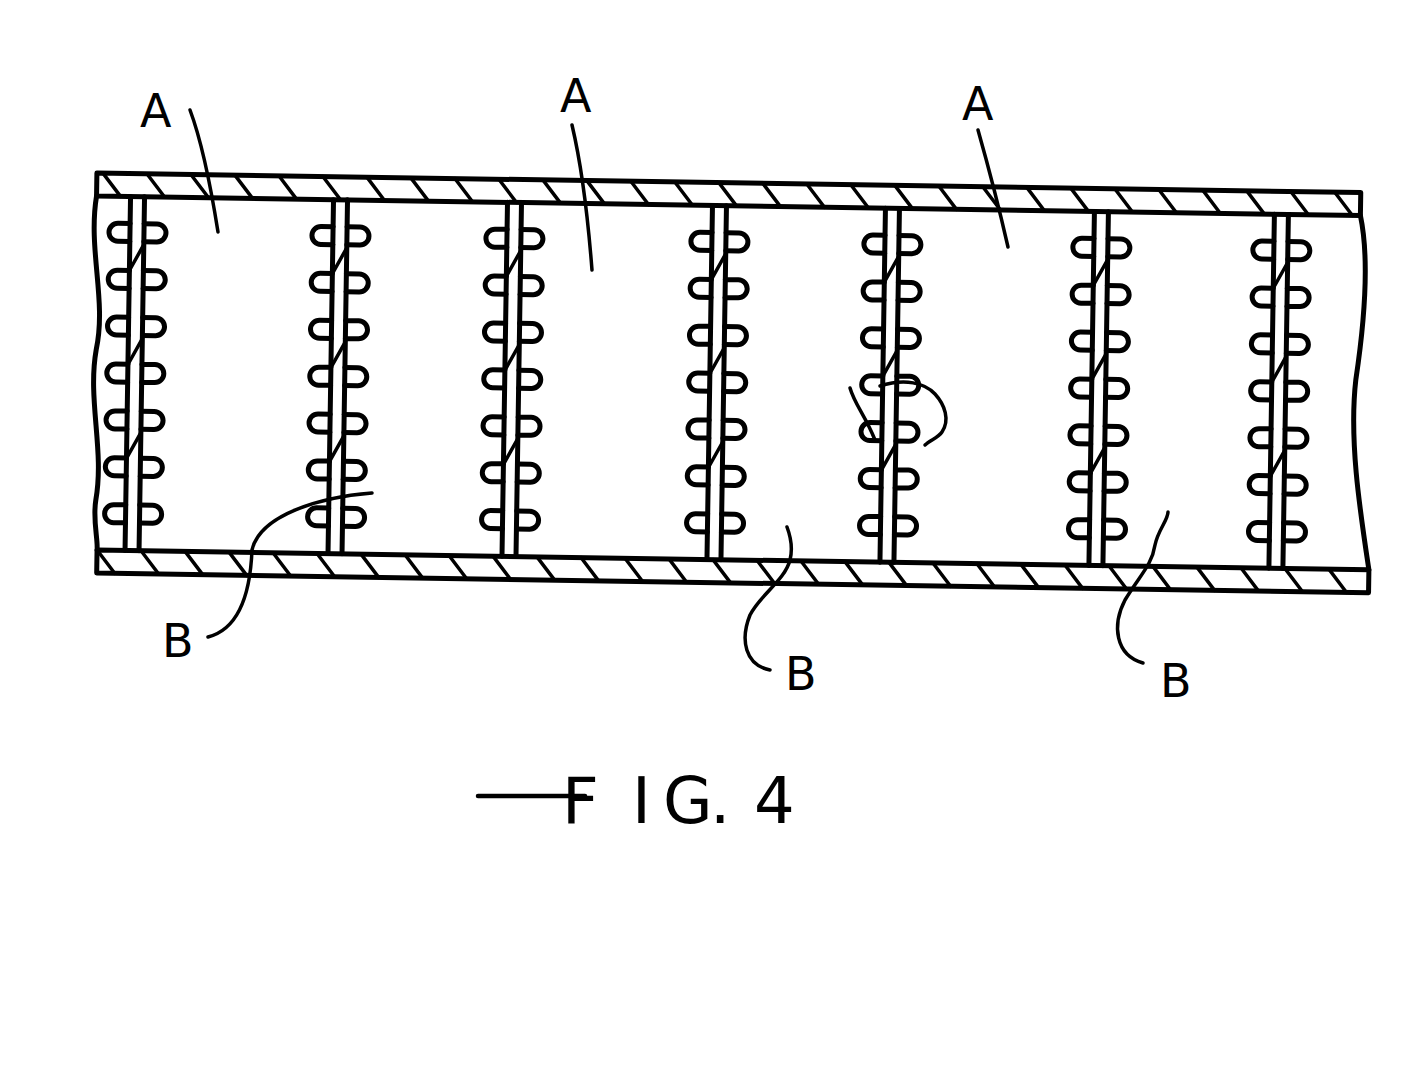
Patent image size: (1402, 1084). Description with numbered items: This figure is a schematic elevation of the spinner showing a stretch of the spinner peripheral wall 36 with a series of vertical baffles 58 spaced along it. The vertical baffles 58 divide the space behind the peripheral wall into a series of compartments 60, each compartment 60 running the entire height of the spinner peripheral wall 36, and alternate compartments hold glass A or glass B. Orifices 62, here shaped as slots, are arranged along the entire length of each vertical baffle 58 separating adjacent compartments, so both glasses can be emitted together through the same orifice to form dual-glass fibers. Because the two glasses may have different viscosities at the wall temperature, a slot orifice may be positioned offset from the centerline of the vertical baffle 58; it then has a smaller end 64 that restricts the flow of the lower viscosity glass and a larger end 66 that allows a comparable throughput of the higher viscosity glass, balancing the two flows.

The spinner peripheral wall 36 is at (1217, 406).
The vertical baffle 58 is at (503, 497).
The compartment 60 is at (623, 233).
The orifice 62 is at (363, 280).
The smaller end 64 is at (877, 383).
The larger end 66 is at (932, 421).